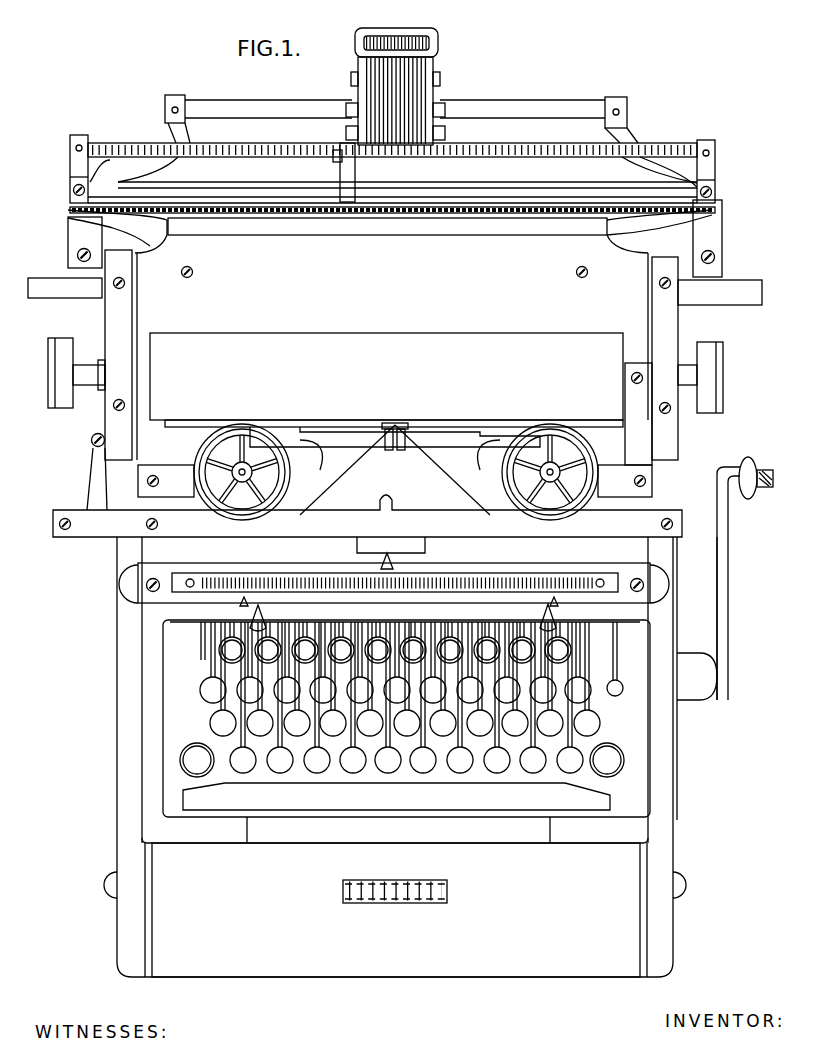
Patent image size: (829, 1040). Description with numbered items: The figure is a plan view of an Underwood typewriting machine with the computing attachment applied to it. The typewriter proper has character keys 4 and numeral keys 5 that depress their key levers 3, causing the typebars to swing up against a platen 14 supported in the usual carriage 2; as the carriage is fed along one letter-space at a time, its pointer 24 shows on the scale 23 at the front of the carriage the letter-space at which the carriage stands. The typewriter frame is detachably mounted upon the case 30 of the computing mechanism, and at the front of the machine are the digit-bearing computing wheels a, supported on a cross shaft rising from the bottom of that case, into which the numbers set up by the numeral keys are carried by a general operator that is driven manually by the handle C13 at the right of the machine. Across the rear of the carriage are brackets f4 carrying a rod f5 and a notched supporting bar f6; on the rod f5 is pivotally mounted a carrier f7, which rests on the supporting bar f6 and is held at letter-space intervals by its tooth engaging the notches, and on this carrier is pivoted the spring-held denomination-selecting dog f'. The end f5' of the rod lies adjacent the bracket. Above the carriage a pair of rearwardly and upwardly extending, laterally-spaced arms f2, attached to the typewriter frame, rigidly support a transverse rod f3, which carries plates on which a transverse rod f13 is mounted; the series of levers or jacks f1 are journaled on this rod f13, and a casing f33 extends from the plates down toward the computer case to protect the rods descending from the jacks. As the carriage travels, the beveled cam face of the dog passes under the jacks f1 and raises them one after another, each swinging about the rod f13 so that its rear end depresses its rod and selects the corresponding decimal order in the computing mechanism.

The jacks f1 is at (428, 36).
The casing f33 is at (438, 43).
The transverse rod f13 is at (444, 110).
The transverse rod f3 is at (557, 104).
The arms f2 is at (168, 129).
The supporting bar f6 is at (546, 146).
The brackets f4 is at (70, 150).
The carrier f7 is at (355, 170).
The denomination-selecting dog f' is at (323, 164).
The rod f5 is at (392, 185).
The paper deflector f5' is at (103, 208).
The platen 14 is at (386, 376).
The carriage 2 is at (367, 524).
The pointer 24 is at (392, 560).
The scale 23 is at (456, 580).
The case 30 is at (675, 941).
The key levers 3 is at (240, 676).
The character keys 4 is at (208, 718).
The numeral keys 5 is at (300, 628).
The handle C13 is at (720, 536).
The computing wheels a is at (412, 880).